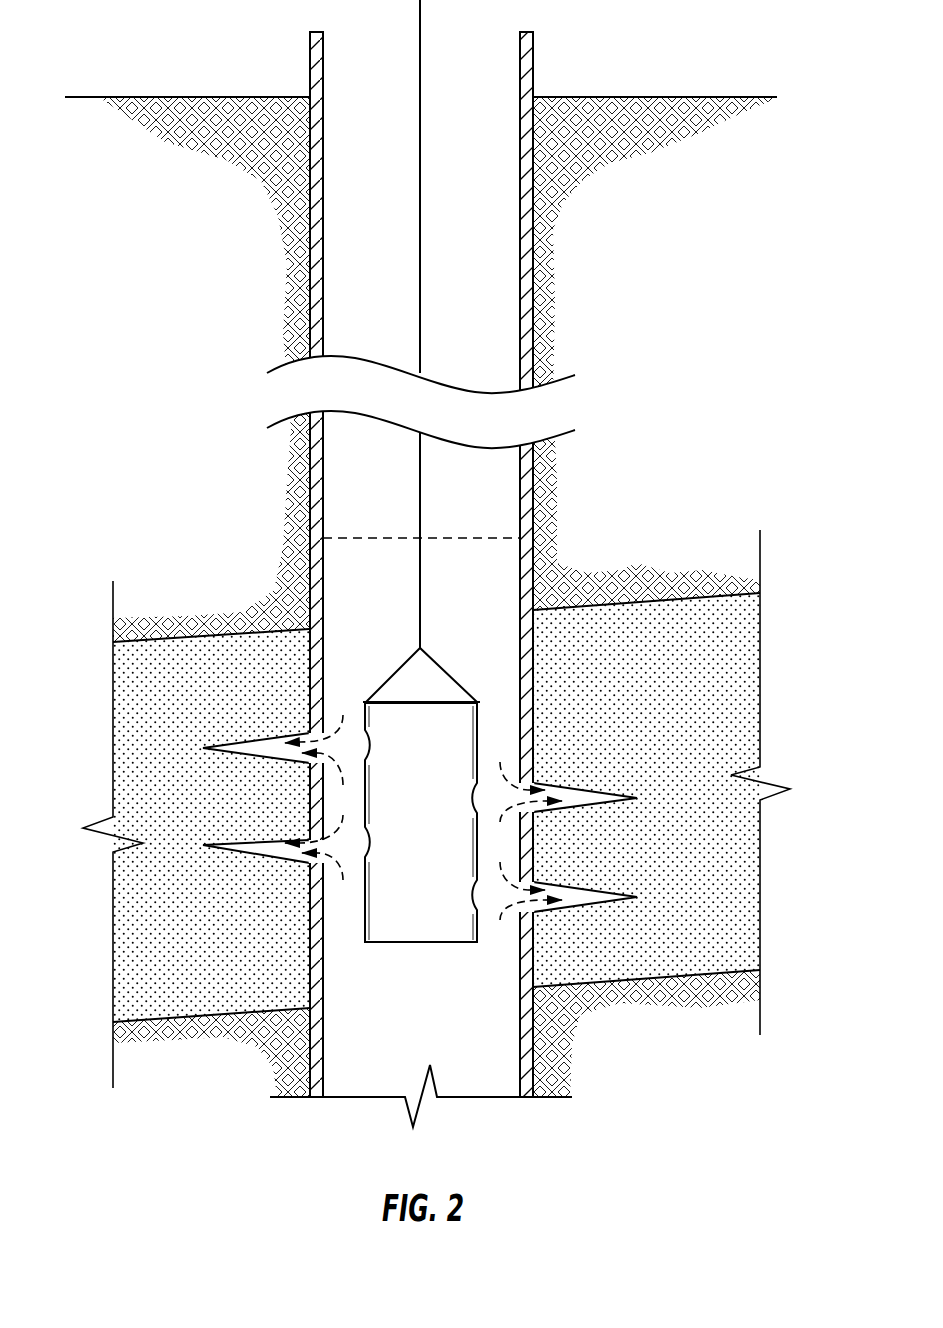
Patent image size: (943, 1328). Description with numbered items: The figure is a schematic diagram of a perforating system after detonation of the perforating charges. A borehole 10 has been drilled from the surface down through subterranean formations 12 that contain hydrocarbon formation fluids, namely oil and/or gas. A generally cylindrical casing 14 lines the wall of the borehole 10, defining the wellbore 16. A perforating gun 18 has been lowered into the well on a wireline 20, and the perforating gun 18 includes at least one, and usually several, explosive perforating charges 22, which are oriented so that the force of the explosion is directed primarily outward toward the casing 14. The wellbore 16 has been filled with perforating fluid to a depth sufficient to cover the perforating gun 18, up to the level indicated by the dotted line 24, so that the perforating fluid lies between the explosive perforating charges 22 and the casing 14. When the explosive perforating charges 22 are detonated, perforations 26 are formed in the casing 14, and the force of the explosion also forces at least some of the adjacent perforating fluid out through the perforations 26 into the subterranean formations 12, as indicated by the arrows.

The borehole 10 is at (486, 316).
The subterranean formations 12 is at (208, 909).
The casing 14 is at (310, 279).
The wellbore 16 is at (356, 614).
The perforating gun 18 is at (393, 920).
The wireline 20 is at (420, 300).
The explosive perforating charges 22 is at (434, 817).
The dotted line 24 is at (455, 538).
The perforations 26 is at (227, 753).